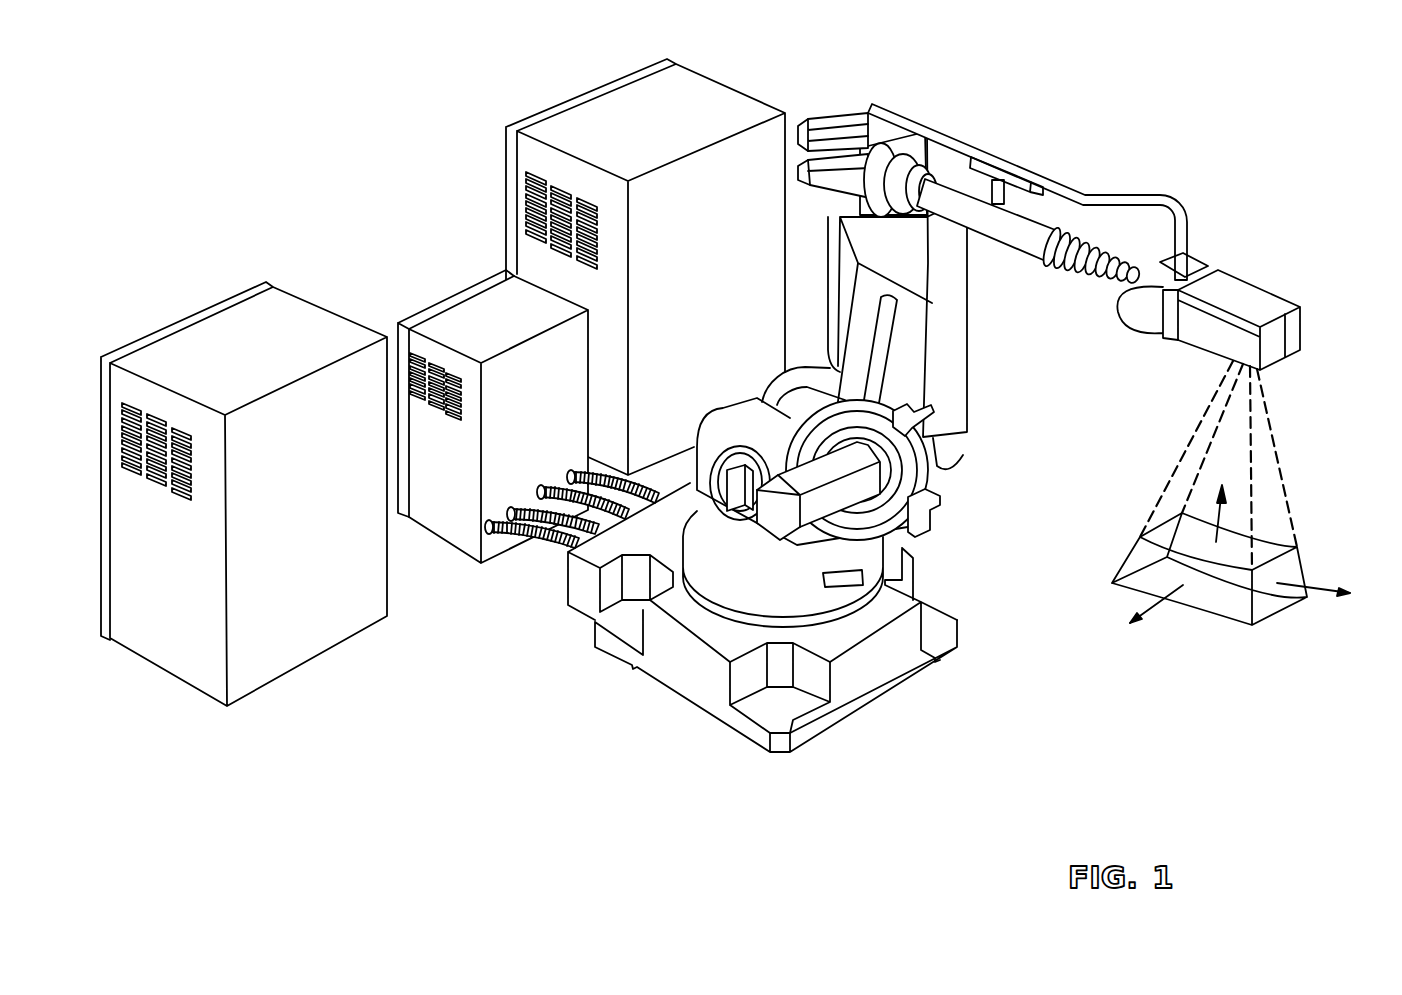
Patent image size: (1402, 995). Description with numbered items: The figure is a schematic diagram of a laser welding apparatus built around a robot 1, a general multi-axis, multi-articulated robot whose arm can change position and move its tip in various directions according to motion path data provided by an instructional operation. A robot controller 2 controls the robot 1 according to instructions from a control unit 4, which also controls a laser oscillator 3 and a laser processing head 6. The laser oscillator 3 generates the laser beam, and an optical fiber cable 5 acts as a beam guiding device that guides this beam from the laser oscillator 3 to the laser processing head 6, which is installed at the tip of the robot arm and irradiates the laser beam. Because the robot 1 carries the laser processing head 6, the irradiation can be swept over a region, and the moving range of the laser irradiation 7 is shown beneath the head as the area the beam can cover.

The robot 1 is at (945, 362).
The robot controller 2 is at (448, 317).
The laser oscillator 3 is at (735, 110).
The control unit 4 is at (313, 316).
The optical fiber cable 5 is at (1095, 194).
The laser processing head 6 is at (1248, 294).
The moving range of the laser irradiation 7 is at (1208, 597).